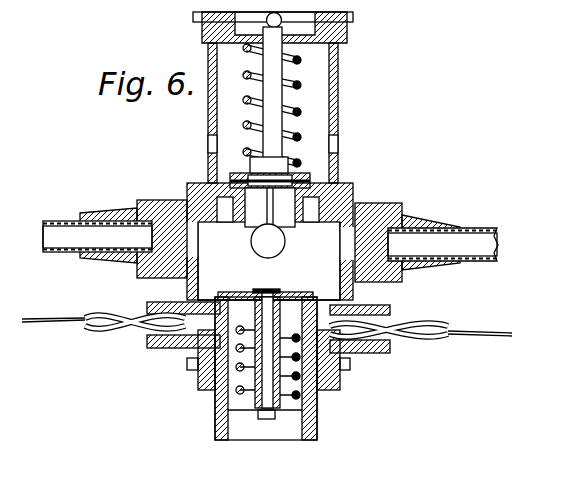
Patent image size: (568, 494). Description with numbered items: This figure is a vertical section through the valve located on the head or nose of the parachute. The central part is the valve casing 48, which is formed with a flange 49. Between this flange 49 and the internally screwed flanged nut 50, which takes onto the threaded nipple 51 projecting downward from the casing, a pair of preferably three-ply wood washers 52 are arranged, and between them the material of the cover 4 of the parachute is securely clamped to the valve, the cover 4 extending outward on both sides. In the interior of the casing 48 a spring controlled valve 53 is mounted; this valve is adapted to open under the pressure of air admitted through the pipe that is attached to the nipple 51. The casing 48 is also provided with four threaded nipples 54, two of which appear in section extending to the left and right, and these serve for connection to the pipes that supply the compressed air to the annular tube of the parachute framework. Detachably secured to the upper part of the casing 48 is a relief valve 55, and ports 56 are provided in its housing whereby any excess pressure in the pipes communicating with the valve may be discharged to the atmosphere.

The cover 4 is at (33, 324).
The valve casing 48 is at (270, 241).
The flange 49 is at (385, 313).
The internally screwed flanged nut 50 is at (350, 365).
The threaded nipple 51 is at (215, 420).
The three-ply wood washers 52 is at (102, 310).
The spring controlled valve 53 is at (232, 292).
The threaded nipples 54 is at (150, 200).
The relief valve 55 is at (328, 183).
The ports 56 is at (207, 147).